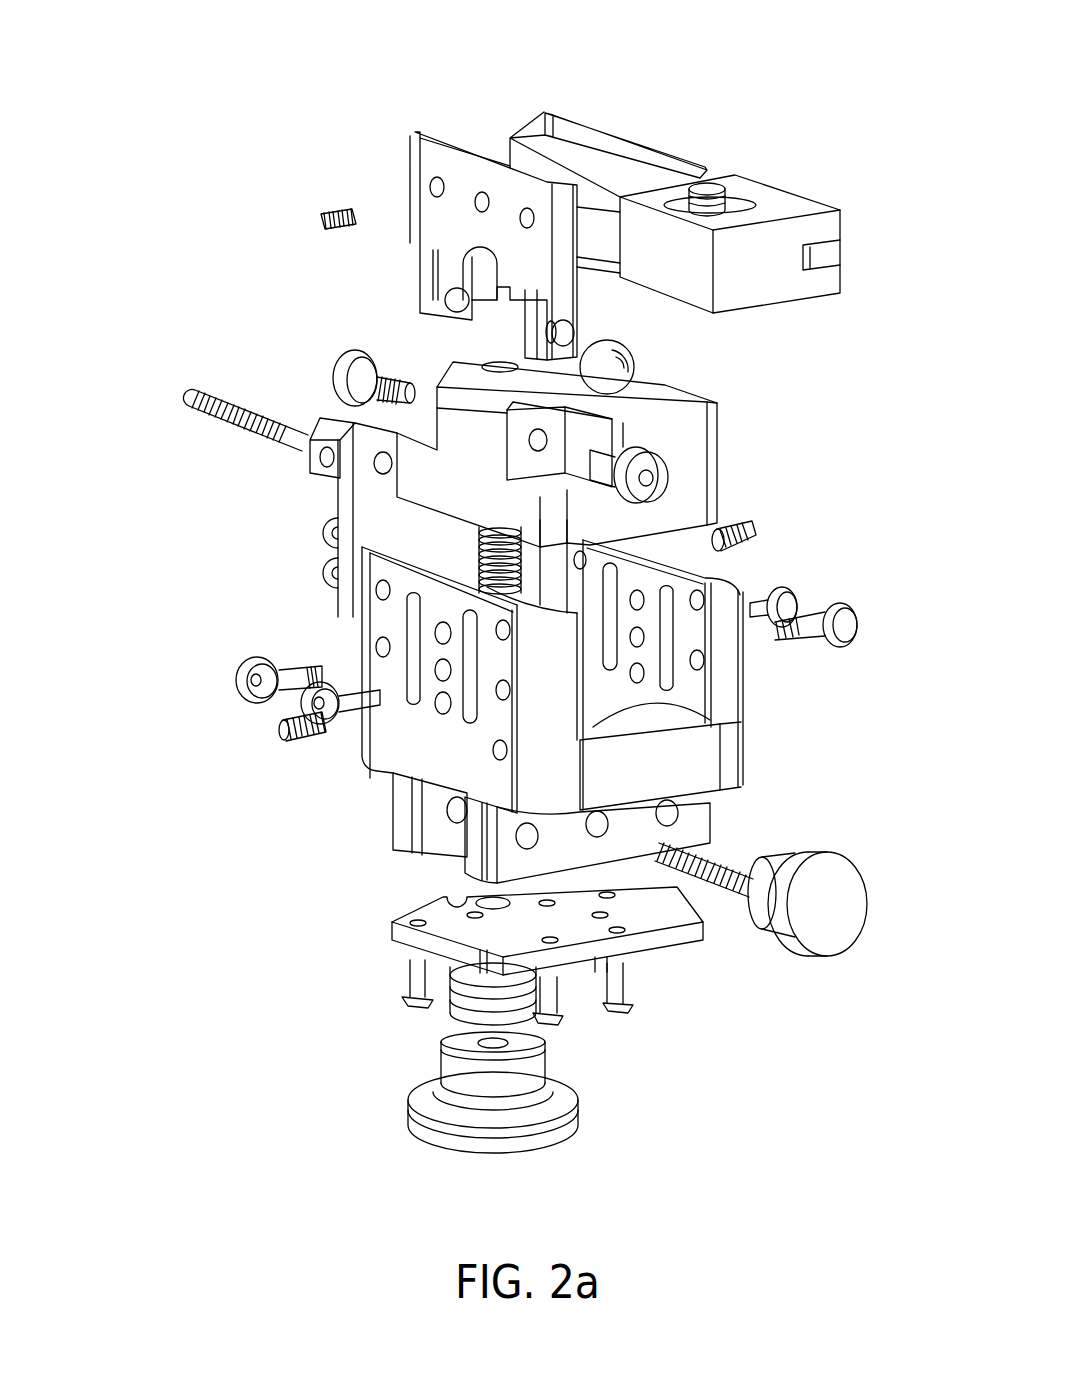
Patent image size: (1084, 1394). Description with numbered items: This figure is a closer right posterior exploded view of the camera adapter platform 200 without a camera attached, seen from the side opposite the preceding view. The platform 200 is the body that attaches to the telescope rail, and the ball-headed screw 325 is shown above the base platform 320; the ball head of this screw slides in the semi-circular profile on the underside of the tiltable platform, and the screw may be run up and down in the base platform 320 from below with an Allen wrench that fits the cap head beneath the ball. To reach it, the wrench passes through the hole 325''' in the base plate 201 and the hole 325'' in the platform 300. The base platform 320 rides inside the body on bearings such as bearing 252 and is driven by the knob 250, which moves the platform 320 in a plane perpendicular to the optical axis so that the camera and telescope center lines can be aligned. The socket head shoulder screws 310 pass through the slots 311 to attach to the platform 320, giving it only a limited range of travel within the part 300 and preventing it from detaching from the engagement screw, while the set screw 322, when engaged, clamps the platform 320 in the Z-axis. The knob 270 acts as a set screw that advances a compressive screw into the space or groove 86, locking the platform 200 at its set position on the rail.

The platform 200 is at (258, 82).
The ball-headed screw 325 is at (687, 366).
The base platform 320 is at (680, 437).
The slots 311 is at (402, 640).
The socket head shoulder screws 310 is at (247, 668).
The set screw 322 is at (277, 737).
The platform 300 is at (432, 747).
The space or groove 86 is at (440, 810).
The hole in platform 300 325'' is at (778, 647).
The knob (set screw) 270 is at (818, 888).
The base plate 201 is at (565, 955).
The hole in base plate 201 325''' is at (693, 938).
The bearing 252 is at (450, 1007).
The knob 250 is at (455, 1122).